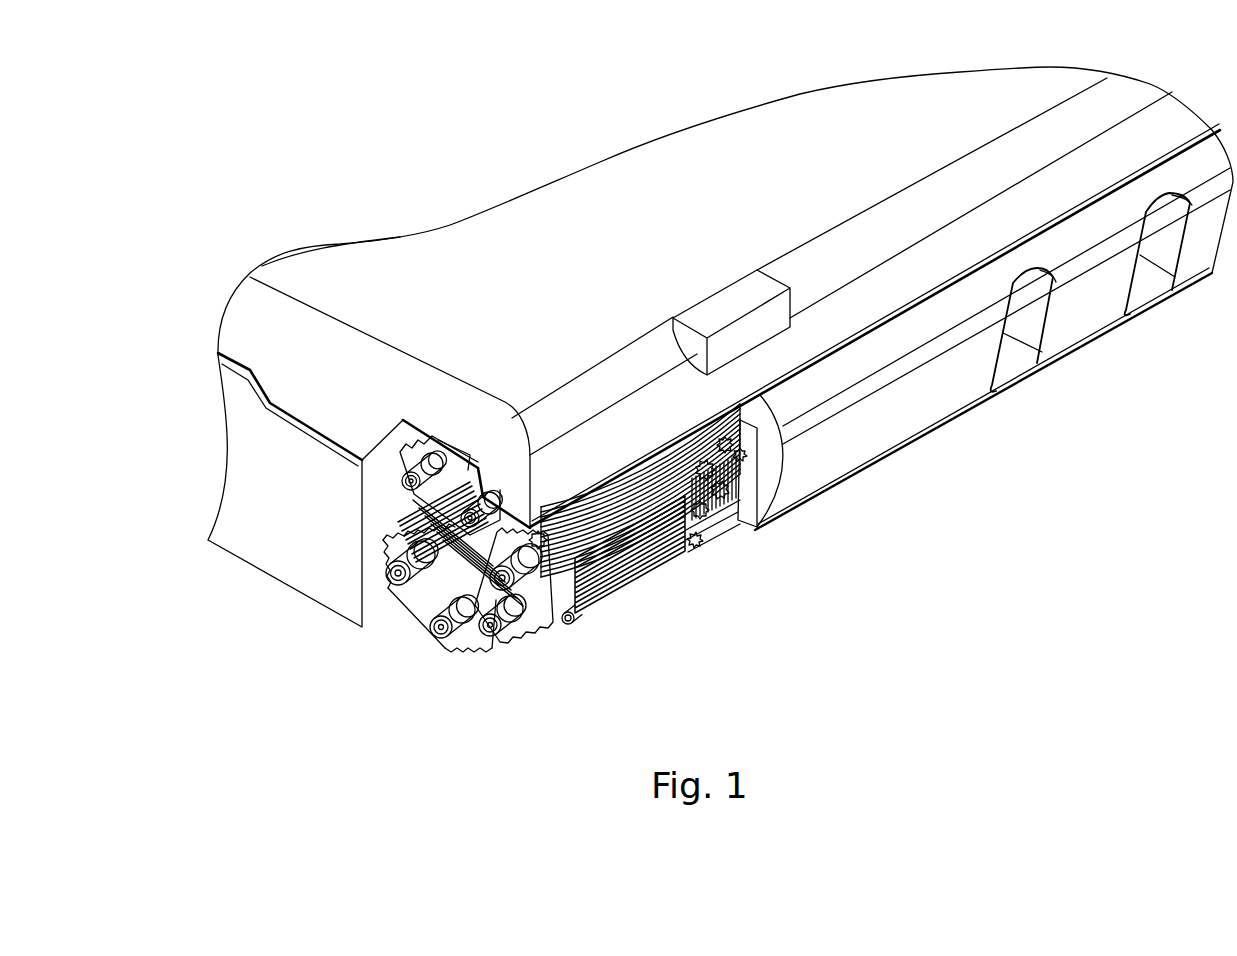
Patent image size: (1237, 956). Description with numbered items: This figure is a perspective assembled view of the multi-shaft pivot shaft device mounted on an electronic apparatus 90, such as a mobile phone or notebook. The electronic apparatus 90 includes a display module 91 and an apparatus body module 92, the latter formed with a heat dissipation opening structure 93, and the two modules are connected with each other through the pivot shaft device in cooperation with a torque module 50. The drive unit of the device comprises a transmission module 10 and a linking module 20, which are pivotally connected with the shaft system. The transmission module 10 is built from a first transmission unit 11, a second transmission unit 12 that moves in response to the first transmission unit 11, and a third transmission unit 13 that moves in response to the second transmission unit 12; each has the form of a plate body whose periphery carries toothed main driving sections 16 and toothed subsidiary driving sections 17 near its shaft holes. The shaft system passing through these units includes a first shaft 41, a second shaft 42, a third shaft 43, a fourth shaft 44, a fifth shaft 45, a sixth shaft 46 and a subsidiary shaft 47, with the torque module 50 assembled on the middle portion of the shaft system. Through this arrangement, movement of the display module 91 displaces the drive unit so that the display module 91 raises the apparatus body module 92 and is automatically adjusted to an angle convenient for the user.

The transmission module 10 is at (561, 545).
The first transmission unit 11 is at (475, 477).
The second transmission unit 12 is at (572, 624).
The third transmission unit 13 is at (415, 613).
The toothed main driving section 16 is at (480, 650).
The toothed subsidiary driving section 17 is at (400, 618).
The linking module 20 is at (703, 567).
The first shaft 41 is at (402, 484).
The second shaft 42 is at (493, 513).
The third shaft 43 is at (543, 637).
The fourth shaft 44 is at (512, 655).
The fifth shaft 45 is at (437, 636).
The sixth shaft 46 is at (388, 580).
The subsidiary shaft 47 is at (472, 448).
The torque module 50 is at (637, 587).
The electronic apparatus 90 is at (540, 170).
The display module 91 is at (458, 242).
The apparatus body module 92 is at (258, 548).
The heat dissipation opening structure 93 is at (1030, 318).